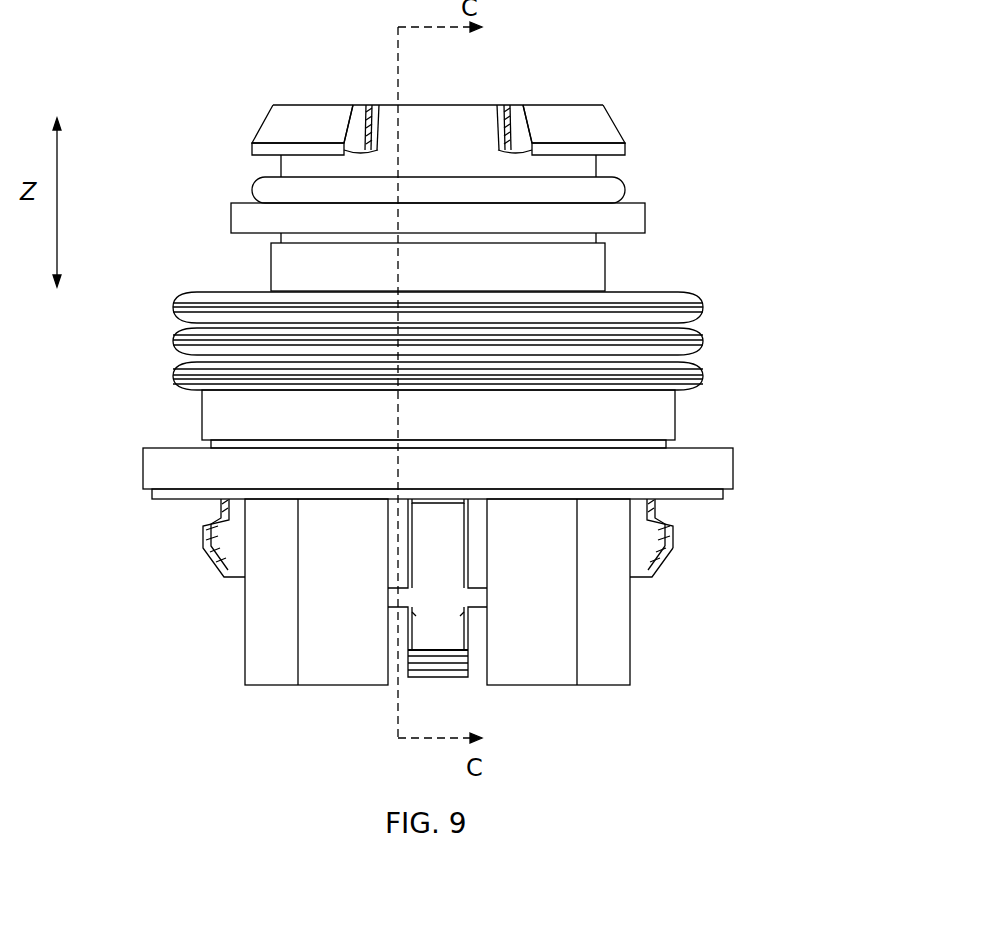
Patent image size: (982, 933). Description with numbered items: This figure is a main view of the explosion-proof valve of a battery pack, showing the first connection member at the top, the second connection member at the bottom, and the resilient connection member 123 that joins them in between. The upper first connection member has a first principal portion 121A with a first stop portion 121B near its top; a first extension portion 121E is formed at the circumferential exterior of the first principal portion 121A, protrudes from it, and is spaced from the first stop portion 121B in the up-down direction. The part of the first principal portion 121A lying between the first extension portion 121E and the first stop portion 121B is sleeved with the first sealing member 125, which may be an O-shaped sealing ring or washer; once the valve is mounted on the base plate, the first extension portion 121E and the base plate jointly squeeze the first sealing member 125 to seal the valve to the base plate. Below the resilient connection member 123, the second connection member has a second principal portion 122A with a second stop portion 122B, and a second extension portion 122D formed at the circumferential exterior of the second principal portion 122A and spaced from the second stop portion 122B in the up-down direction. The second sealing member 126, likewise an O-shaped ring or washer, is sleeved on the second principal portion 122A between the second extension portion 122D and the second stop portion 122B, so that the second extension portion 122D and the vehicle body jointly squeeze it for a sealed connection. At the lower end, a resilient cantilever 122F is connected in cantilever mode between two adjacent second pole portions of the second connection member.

The first principal portion 121A is at (467, 150).
The first stop portion 121B is at (578, 135).
The first sealing member 125 is at (582, 193).
The first extension portion 121E is at (610, 222).
The resilient connection member 123 is at (678, 350).
The second extension portion 122D is at (717, 448).
The second sealing member 126 is at (694, 494).
The second principal portion 122A is at (670, 547).
The second stop portion 122B is at (670, 567).
The resilient cantilever 122F is at (423, 627).